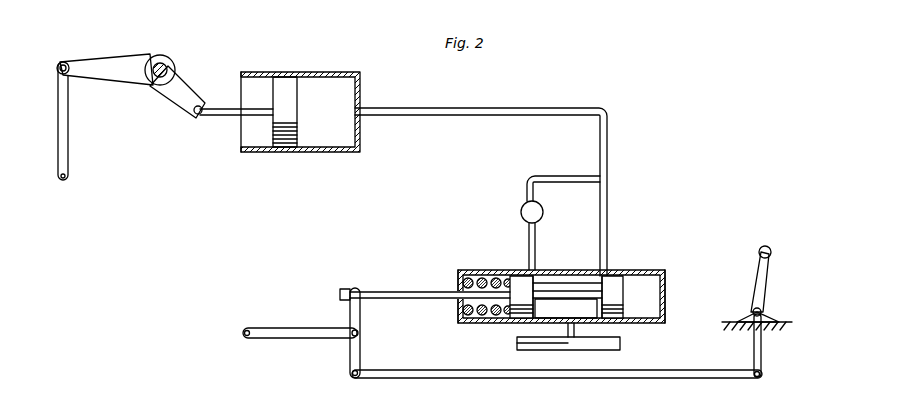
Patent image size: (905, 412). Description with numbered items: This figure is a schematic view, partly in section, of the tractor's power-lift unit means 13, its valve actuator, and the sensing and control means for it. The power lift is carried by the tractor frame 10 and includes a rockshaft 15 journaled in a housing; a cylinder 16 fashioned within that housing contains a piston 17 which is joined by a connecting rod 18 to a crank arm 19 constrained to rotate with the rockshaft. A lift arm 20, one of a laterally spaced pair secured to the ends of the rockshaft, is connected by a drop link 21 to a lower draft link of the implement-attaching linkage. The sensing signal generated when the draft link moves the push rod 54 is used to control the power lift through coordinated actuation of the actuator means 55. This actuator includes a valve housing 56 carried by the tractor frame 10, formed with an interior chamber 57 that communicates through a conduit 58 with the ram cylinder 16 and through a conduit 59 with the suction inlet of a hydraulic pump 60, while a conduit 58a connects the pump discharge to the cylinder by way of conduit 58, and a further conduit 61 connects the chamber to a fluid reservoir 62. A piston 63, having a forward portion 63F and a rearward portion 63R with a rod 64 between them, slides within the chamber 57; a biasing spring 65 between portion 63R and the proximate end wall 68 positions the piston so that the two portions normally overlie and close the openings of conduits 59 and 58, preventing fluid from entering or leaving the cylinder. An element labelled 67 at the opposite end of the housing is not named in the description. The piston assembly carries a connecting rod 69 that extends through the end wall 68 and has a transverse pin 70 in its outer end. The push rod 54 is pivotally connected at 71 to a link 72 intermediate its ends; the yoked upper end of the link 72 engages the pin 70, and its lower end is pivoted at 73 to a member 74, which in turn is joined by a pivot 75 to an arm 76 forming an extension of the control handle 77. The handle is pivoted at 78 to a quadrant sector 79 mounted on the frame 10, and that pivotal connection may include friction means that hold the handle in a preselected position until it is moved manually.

The tractor frame 10 is at (727, 325).
The power-lift unit means 13 is at (660, 152).
The rockshaft 15 is at (170, 62).
The cylinder 16 is at (335, 72).
The piston 17 is at (290, 116).
The connecting rod 18 is at (228, 108).
The crank arm 19 is at (178, 104).
The lift arm 20 is at (107, 60).
The drop link 21 is at (68, 130).
The push rod 54 is at (312, 300).
The actuator means 55 is at (465, 270).
The valve housing 56 is at (590, 276).
The interior chamber 57 is at (578, 286).
The conduit 58 is at (608, 224).
The conduit 58a is at (565, 176).
The conduit 59 is at (528, 237).
The hydraulic pump 60 is at (520, 208).
The conduit 61 is at (597, 300).
The fluid reservoir 62 is at (540, 350).
The piston 63 is at (545, 282).
The rearward portion 63R is at (522, 276).
The forward portion 63F is at (623, 276).
The rod 64 is at (583, 346).
The biasing spring 65 is at (478, 272).
The front end wall 67 is at (670, 276).
The end wall 68 is at (458, 278).
The connecting rod 69 is at (392, 292).
The pin 70 is at (345, 289).
The pivotal connection 71 is at (360, 333).
The link 72 is at (350, 349).
The pivot 73 is at (356, 378).
The member 74 is at (470, 379).
The pivot 75 is at (757, 380).
The arm 76 is at (752, 346).
The control handle 77 is at (757, 266).
The pivotal connection 78 is at (766, 308).
The quadrant sector 79 is at (750, 305).